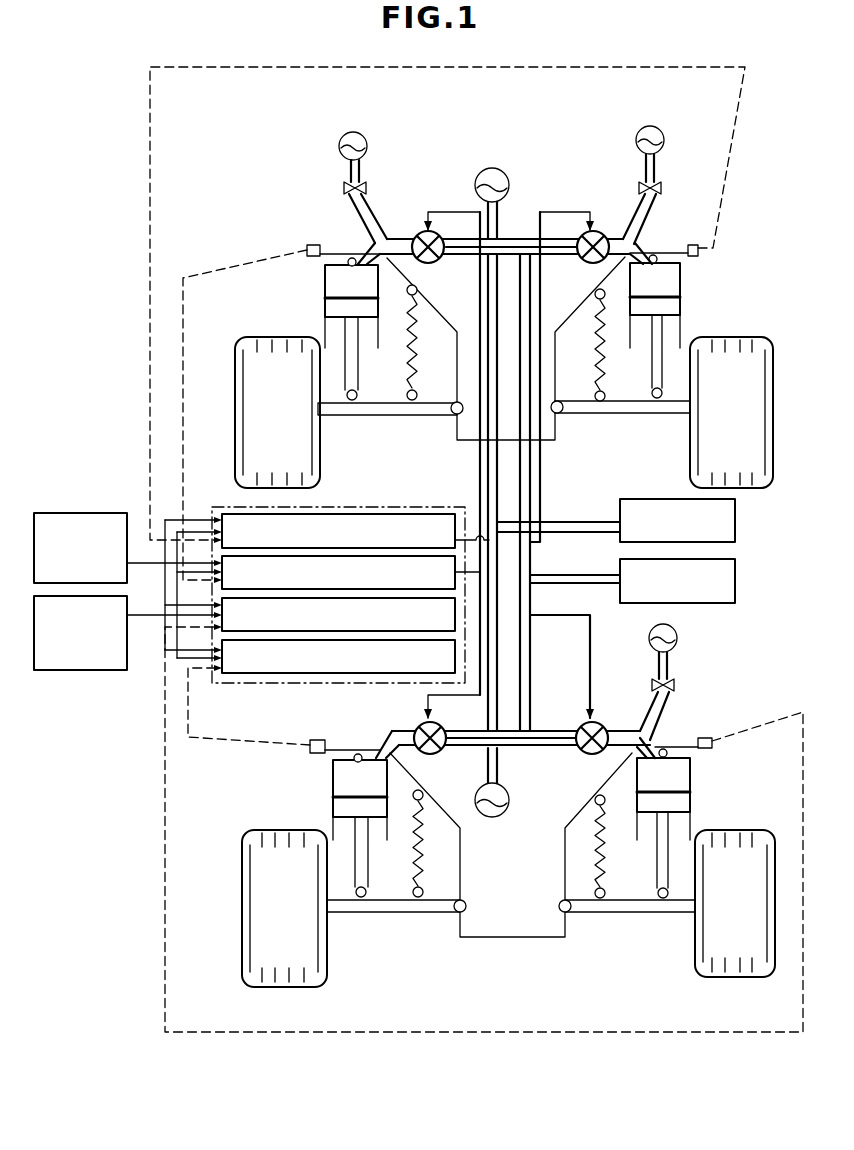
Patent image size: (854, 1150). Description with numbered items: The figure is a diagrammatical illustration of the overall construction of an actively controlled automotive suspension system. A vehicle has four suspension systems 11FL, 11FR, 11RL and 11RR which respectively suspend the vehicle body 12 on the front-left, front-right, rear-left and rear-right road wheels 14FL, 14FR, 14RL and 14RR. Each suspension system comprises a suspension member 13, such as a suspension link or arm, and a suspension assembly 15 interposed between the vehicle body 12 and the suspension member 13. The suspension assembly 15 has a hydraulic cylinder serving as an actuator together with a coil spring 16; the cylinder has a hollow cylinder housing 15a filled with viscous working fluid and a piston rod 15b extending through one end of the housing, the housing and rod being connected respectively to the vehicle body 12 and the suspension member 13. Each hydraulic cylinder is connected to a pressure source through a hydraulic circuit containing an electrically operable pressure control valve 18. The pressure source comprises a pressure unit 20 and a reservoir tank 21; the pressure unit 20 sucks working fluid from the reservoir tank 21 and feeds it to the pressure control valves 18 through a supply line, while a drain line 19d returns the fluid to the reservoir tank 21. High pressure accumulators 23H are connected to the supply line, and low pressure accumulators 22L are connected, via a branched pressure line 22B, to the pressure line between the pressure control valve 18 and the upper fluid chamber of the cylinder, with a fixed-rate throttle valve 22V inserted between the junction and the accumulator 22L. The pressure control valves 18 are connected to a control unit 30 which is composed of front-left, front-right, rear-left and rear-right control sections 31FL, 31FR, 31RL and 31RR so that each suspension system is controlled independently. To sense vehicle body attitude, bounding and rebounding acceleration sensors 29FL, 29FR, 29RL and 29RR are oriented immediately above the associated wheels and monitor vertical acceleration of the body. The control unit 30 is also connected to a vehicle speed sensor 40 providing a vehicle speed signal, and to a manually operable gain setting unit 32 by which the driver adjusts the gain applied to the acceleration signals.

The rear-right suspension system 11RR is at (296, 275).
The rear-left suspension system 11RL is at (780, 260).
The front-right suspension system 11FR is at (316, 791).
The front-left suspension system 11FL is at (778, 768).
The vehicle body 12 is at (548, 443).
The suspension member 13 is at (382, 403).
The rear-right road wheel 14RR is at (246, 356).
The rear-left road wheel 14RL is at (740, 336).
The front-right road wheel 14FR is at (258, 890).
The front-left road wheel 14FL is at (720, 980).
The suspension assembly 15 is at (325, 328).
The cylinder housing 15a is at (338, 262).
The piston rod 15b is at (660, 400).
The coil spring 16 is at (408, 342).
The pressure control valve 18 is at (420, 232).
The drain line 19d is at (530, 670).
The pressure unit 20 is at (645, 499).
The reservoir tank 21 is at (618, 567).
The low pressure accumulator 22L is at (363, 134).
The throttle valve 22V is at (346, 186).
The branched pressure line 22B is at (360, 210).
The high pressure accumulator 23H is at (486, 172).
The rear-right bounding and rebounding acceleration sensor 29RR is at (307, 247).
The rear-left bounding and rebounding acceleration sensor 29RL is at (710, 240).
The front-right bounding and rebounding acceleration sensor 29FR is at (310, 745).
The front-left bounding and rebounding acceleration sensor 29FL is at (707, 738).
The control unit 30 is at (337, 503).
The rear-left control section 31RL is at (420, 507).
The rear-right control section 31RR is at (457, 578).
The front-left control section 31FL is at (457, 615).
The front-right control section 31FR is at (292, 684).
The manually operable gain setting unit 32 is at (97, 512).
The vehicle speed sensor 40 is at (100, 672).